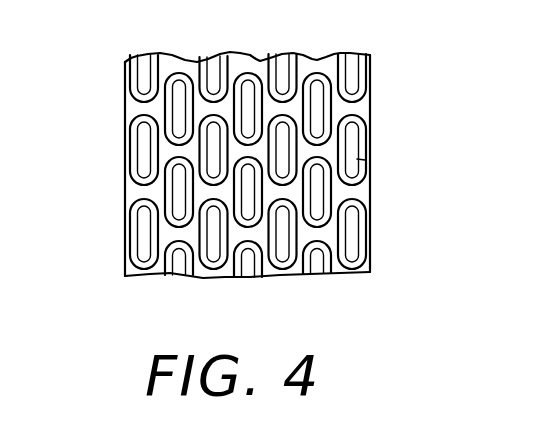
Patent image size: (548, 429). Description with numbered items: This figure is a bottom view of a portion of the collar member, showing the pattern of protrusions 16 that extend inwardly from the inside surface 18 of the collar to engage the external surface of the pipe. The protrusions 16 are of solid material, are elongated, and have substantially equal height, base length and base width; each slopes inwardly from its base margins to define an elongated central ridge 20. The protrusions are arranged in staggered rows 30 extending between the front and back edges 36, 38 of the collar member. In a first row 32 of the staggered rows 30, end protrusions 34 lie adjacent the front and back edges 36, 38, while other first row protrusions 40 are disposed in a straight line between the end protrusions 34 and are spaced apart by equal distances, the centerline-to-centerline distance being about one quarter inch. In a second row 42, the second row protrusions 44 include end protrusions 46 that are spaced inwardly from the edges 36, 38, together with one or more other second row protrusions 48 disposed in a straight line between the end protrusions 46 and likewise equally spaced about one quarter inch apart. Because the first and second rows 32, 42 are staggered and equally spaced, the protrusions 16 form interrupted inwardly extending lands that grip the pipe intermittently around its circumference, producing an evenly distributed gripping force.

The protrusions 16 is at (370, 67).
The inside surface 18 is at (240, 62).
The elongated central ridges 20 is at (363, 127).
The staggered rows 30 is at (86, 162).
The first row 32 is at (110, 238).
The end protrusions 34 is at (126, 252).
The front edge 36 is at (124, 92).
The back edge 38 is at (370, 100).
The first row protrusions 40 is at (215, 274).
The second row 42 is at (120, 181).
The second row protrusions 44 is at (265, 198).
The end protrusions 46 is at (166, 192).
The second row protrusions 48 is at (258, 222).